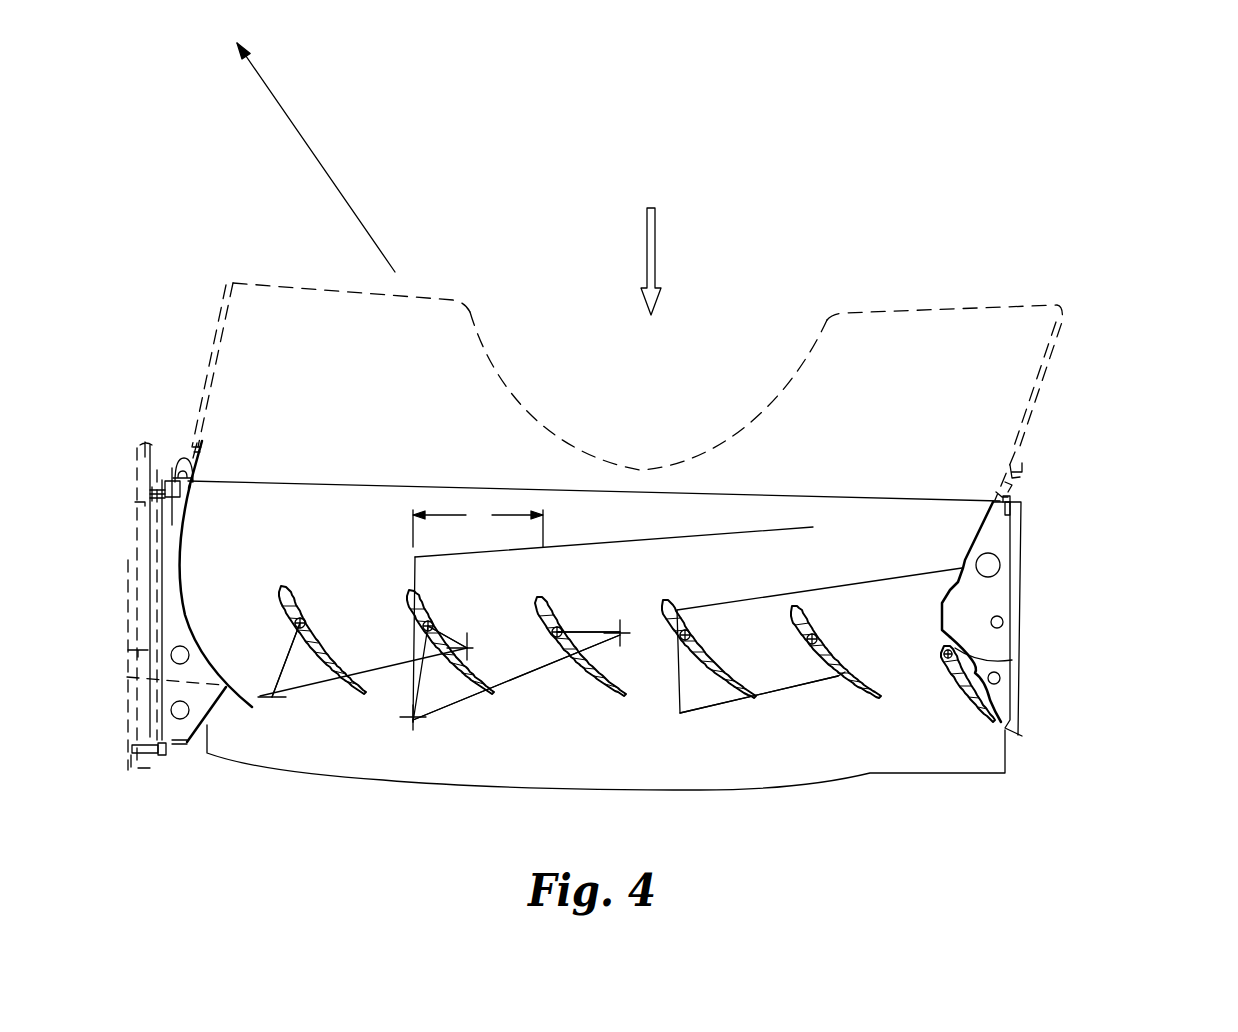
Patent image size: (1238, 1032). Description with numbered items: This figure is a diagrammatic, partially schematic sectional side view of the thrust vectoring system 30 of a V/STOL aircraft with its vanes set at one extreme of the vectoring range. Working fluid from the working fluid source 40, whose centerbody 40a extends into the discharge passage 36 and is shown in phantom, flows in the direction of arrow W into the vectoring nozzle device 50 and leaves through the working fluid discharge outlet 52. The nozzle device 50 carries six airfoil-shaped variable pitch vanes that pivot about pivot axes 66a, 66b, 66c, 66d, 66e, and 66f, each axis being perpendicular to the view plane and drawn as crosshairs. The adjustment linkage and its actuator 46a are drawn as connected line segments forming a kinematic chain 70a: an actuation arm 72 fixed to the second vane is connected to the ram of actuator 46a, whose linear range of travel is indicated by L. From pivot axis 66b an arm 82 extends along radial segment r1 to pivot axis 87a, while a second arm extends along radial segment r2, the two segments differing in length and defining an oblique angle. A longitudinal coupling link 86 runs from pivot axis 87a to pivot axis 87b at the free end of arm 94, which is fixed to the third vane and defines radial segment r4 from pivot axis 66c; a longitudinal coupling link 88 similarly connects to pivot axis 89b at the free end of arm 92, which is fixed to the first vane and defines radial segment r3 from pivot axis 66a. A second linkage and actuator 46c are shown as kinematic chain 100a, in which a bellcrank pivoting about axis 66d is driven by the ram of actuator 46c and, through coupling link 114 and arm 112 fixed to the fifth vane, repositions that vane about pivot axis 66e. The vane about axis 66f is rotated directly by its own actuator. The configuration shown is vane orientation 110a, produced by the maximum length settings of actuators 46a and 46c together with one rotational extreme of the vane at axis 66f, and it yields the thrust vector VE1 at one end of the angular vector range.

The thrust vectoring system 30 is at (1147, 176).
The discharge passage 36 is at (213, 410).
The working fluid source 40 is at (940, 314).
The centerbody 40a is at (645, 468).
The vectoring nozzle device 50 is at (1022, 605).
The working fluid discharge outlet 52 is at (870, 773).
The pivot axis 66a is at (306, 620).
The pivot axis 66b is at (410, 617).
The pivot axis 66c is at (562, 612).
The pivot axis 66d is at (706, 648).
The pivot axis 66e is at (822, 640).
The pivot axis 66f is at (966, 650).
The kinematic chain 70a is at (455, 700).
The actuation arm 72 is at (420, 567).
The arm 82 is at (452, 640).
The longitudinal coupling link 86 is at (555, 662).
The pivot axis 87a is at (475, 650).
The pivot axis 87b is at (621, 646).
The longitudinal coupling link 88 is at (377, 668).
The pivot axis 89b is at (268, 708).
The arm 92 is at (281, 675).
The arm 94 is at (601, 632).
The kinematic chain 100a is at (702, 716).
The vane orientation 110a is at (292, 792).
The arm 112 is at (848, 666).
The coupling link 114 is at (808, 690).
The actuator 46a is at (640, 540).
The actuator 46c is at (880, 578).
The linear range of travel L is at (478, 524).
The radial segment r1 is at (450, 640).
The radial segment r2 is at (420, 680).
The radial segment r3 is at (289, 660).
The radial segment r4 is at (586, 630).
The thrust vector VE1 is at (316, 157).
The working fluid flow direction W is at (656, 228).